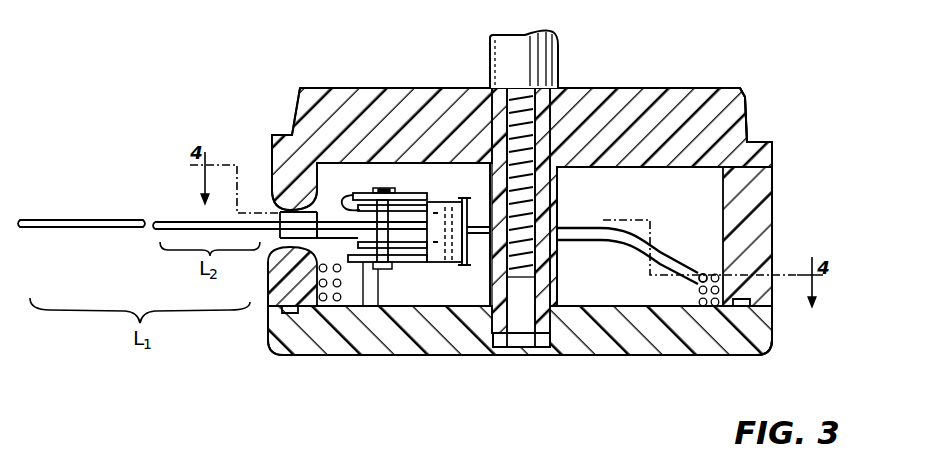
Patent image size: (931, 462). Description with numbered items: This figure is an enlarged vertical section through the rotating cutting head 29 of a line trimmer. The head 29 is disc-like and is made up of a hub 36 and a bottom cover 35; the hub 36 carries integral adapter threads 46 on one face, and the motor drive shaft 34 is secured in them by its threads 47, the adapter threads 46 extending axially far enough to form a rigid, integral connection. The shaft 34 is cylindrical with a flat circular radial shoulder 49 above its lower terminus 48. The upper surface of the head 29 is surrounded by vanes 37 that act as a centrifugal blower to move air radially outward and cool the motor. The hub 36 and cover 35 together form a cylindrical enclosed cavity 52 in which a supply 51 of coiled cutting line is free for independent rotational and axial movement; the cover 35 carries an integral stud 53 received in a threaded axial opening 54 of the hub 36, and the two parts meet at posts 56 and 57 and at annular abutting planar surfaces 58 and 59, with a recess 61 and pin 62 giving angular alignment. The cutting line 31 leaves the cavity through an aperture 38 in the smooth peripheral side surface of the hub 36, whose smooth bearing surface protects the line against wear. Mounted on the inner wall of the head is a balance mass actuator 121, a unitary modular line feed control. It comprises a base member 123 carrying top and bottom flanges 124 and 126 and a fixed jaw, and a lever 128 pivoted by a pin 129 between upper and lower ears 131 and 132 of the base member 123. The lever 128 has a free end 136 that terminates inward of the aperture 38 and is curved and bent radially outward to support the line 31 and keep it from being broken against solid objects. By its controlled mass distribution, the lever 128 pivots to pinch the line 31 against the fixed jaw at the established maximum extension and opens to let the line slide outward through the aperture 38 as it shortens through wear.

The head 29 is at (777, 149).
The cutting line 31 is at (93, 219).
The drive shaft 34 is at (511, 46).
The bottom cover 35 is at (774, 348).
The hub 36 is at (773, 210).
The vanes 37 is at (747, 108).
The aperture 38 is at (300, 247).
The adapter threads 46 is at (598, 103).
The threads 47 is at (515, 85).
The lower terminus 48 is at (497, 148).
The radial shoulder 49 is at (556, 118).
The supply of coiled cutting line 51 is at (699, 291).
The cavity 52 is at (677, 206).
The stud 53 is at (517, 340).
The threaded axial opening 54 is at (557, 229).
The post 56 is at (558, 193).
The post 57 is at (558, 286).
The annular abutting planar surface 58 is at (738, 337).
The annular abutting planar surface 59 is at (268, 294).
The recess 61 is at (748, 322).
The pin 62 is at (270, 334).
The balance mass actuator 121 is at (431, 192).
The base member 123 is at (448, 266).
The top flange 124 is at (405, 189).
The bottom flange 126 is at (410, 263).
The lever 128 is at (294, 134).
The pin 129 is at (378, 306).
The upper ear 131 is at (355, 185).
The lower ear 132 is at (363, 306).
The free end 136 is at (269, 208).